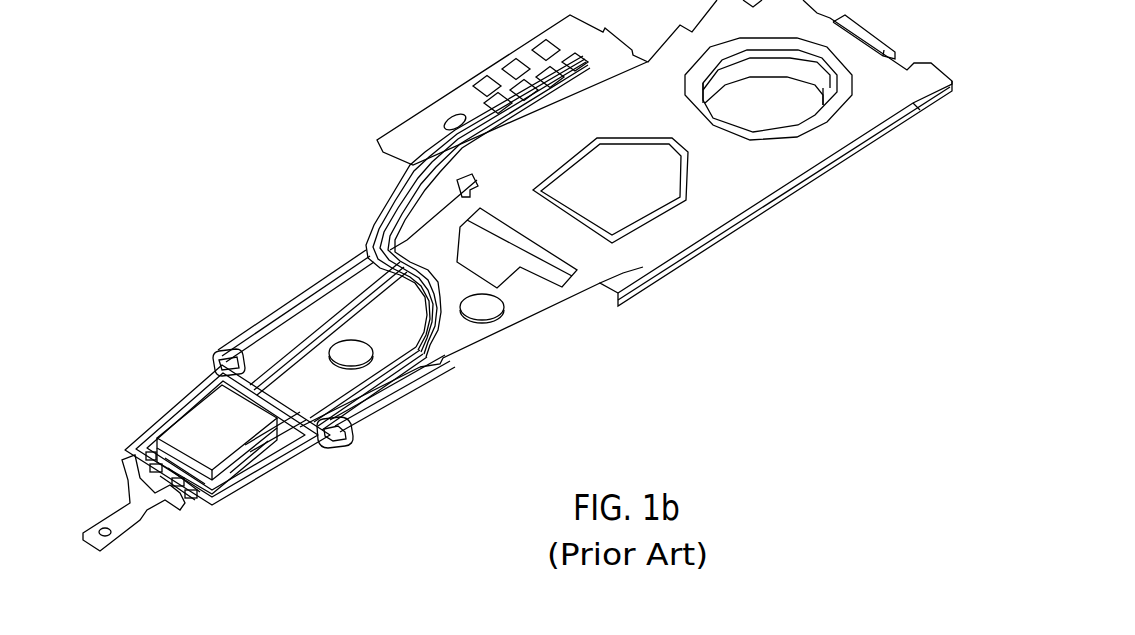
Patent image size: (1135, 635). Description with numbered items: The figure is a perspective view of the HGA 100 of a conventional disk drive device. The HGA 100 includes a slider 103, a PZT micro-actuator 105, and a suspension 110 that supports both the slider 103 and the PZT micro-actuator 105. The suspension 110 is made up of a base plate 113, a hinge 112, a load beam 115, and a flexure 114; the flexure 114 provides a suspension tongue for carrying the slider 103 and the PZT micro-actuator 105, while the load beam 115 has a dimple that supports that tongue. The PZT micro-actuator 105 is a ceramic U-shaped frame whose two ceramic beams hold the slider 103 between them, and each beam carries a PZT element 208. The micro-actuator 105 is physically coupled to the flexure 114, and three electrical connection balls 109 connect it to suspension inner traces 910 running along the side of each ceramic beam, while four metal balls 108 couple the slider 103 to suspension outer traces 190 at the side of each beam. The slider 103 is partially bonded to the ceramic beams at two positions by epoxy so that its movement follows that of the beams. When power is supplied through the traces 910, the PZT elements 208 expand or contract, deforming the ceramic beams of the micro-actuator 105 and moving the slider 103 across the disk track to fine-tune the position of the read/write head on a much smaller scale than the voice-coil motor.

The HGA 100 is at (311, 58).
The slider 103 is at (175, 403).
The PZT micro-actuator 105 is at (243, 400).
The metal balls 108 is at (135, 460).
The electrical connection balls 109 is at (305, 450).
The suspension 110 is at (714, 266).
The hinge 112 is at (835, 128).
The base plate 113 is at (732, 226).
The flexure 114 is at (468, 110).
The load beam 115 is at (137, 505).
The suspension outer traces 190 is at (213, 352).
The PZT element 208 is at (187, 387).
The suspension inner traces 910 is at (330, 390).